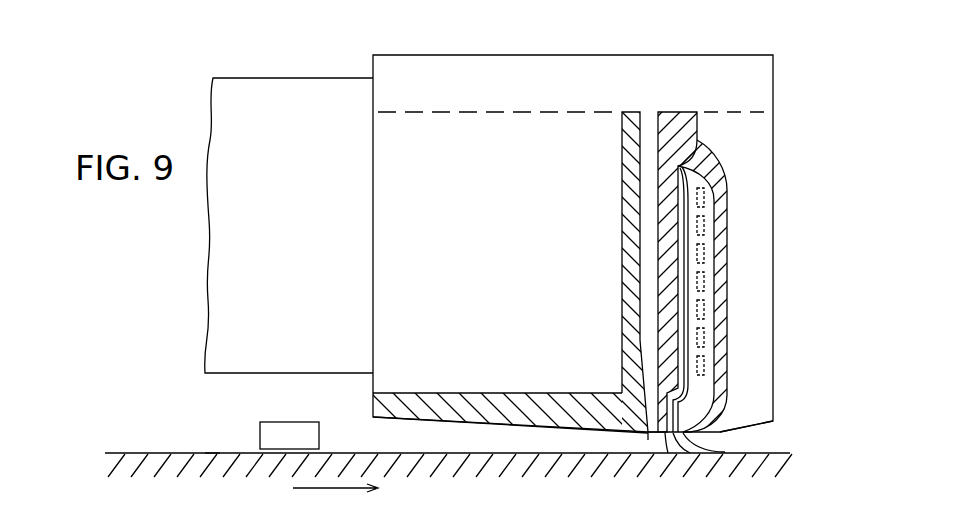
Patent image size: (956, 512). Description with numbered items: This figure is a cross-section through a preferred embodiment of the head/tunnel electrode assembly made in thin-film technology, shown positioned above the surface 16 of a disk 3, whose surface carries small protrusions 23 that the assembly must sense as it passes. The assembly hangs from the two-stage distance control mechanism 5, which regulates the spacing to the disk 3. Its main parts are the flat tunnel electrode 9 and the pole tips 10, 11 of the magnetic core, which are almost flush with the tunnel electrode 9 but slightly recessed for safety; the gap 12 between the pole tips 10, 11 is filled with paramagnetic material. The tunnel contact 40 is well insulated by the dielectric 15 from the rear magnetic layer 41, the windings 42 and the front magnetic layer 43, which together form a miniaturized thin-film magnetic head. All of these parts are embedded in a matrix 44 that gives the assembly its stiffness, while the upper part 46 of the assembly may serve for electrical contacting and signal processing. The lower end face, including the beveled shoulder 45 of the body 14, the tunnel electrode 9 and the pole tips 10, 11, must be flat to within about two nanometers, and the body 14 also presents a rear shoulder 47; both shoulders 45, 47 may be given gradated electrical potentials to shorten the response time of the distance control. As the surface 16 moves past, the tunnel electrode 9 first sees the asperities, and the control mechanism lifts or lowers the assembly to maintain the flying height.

The disk 3 is at (444, 485).
The two-stage distance control mechanism 5 is at (307, 165).
The tunnel electrode 9 is at (648, 441).
The pole tip 10 is at (667, 456).
The pole tip 11 is at (716, 454).
The gap 12 is at (688, 456).
The body 14 is at (558, 403).
The dielectric 15 is at (650, 116).
The surface 16 is at (212, 447).
The small protrusion 23 is at (285, 436).
The tunnel contact 40 is at (632, 292).
The rear magnetic layer 41 is at (677, 113).
The windings 42 is at (702, 283).
The front magnetic layer 43 is at (705, 160).
The matrix 44 is at (500, 245).
The beveled shoulder 45 is at (428, 424).
The upper part 46 is at (704, 62).
The rear shoulder 47 is at (730, 433).